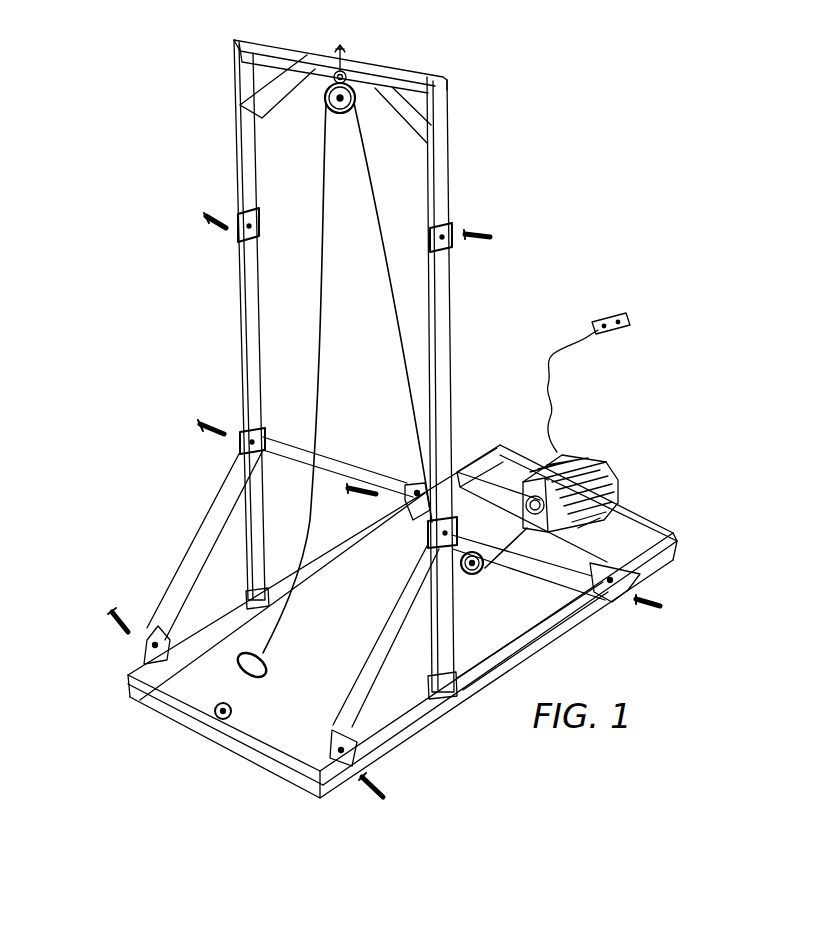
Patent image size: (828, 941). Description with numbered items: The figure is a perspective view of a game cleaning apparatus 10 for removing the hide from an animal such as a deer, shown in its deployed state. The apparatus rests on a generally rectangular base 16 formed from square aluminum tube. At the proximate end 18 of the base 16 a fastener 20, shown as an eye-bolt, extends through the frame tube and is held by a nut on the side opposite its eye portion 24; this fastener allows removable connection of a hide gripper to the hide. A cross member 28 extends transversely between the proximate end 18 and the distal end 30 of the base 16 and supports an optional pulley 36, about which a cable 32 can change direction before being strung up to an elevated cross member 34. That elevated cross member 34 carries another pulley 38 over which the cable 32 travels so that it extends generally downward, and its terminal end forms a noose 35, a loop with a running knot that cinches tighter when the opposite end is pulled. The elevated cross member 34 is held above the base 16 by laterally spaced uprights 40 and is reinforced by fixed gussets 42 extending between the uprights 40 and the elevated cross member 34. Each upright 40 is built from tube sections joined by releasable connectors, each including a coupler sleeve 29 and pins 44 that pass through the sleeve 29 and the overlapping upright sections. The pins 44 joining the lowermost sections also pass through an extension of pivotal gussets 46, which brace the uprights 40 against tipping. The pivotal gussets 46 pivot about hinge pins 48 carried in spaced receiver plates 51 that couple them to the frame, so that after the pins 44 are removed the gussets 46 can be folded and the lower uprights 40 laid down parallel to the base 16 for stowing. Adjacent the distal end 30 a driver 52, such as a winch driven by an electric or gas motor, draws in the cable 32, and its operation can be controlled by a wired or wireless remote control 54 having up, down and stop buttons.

The game cleaning apparatus 10 is at (116, 754).
The base 16 is at (251, 764).
The proximate end 18 is at (126, 680).
The fastener 20 is at (233, 711).
The eye portion 24 is at (216, 718).
The cross member 28 is at (489, 593).
The coupler sleeve 29 is at (242, 222).
The distal end 30 is at (652, 509).
The cable 32 is at (405, 395).
The elevated cross member 34 is at (387, 69).
The noose 35 is at (270, 665).
The pulley 36 is at (492, 562).
The pulley 38 is at (346, 114).
The uprights 40 is at (243, 308).
The fixed gussets 42 is at (272, 100).
The pins 44 is at (213, 231).
The pivotal gussets 46 is at (378, 474).
The hinge pin 48 is at (122, 614).
The receiver plates 51 is at (348, 752).
The driver 52 is at (586, 456).
The remote control 54 is at (605, 317).